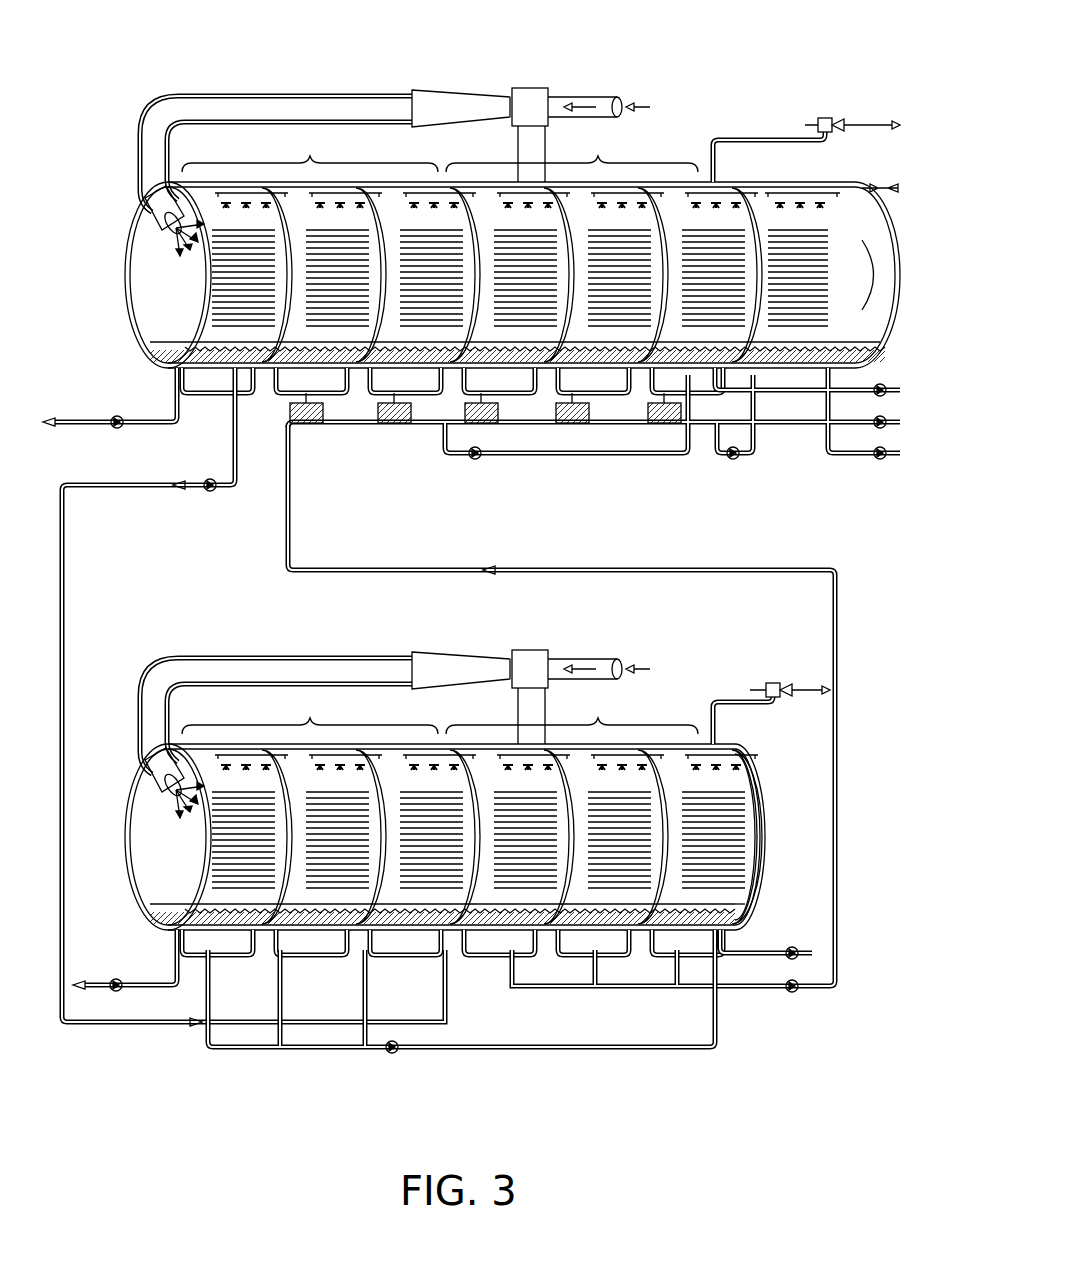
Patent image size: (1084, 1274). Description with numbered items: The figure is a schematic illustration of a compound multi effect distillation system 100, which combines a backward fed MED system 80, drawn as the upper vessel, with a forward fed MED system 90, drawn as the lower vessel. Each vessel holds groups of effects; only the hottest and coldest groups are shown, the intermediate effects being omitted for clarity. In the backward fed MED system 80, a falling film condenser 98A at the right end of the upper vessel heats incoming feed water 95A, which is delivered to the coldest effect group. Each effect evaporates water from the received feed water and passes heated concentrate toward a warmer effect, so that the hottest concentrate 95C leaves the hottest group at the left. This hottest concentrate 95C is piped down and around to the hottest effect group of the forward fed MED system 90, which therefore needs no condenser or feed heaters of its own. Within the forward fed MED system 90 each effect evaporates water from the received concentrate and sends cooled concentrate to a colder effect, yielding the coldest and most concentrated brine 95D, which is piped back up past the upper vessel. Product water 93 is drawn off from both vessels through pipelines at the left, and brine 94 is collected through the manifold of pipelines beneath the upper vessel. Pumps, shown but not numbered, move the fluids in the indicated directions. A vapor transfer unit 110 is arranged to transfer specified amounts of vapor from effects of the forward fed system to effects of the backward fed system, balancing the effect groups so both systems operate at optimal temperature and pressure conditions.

The compound multi effect distillation system 100 is at (608, 33).
The backward fed MED system 80 is at (157, 57).
The forward fed MED system 90 is at (210, 615).
The vapor transfer unit 110 is at (757, 1050).
The product water 93 is at (112, 415).
The brine 94 is at (780, 432).
The feed water 95A is at (876, 186).
The hottest concentrate 95C is at (125, 1028).
The coldest most concentrated brine 95D is at (605, 565).
The falling film condenser 98A is at (878, 275).